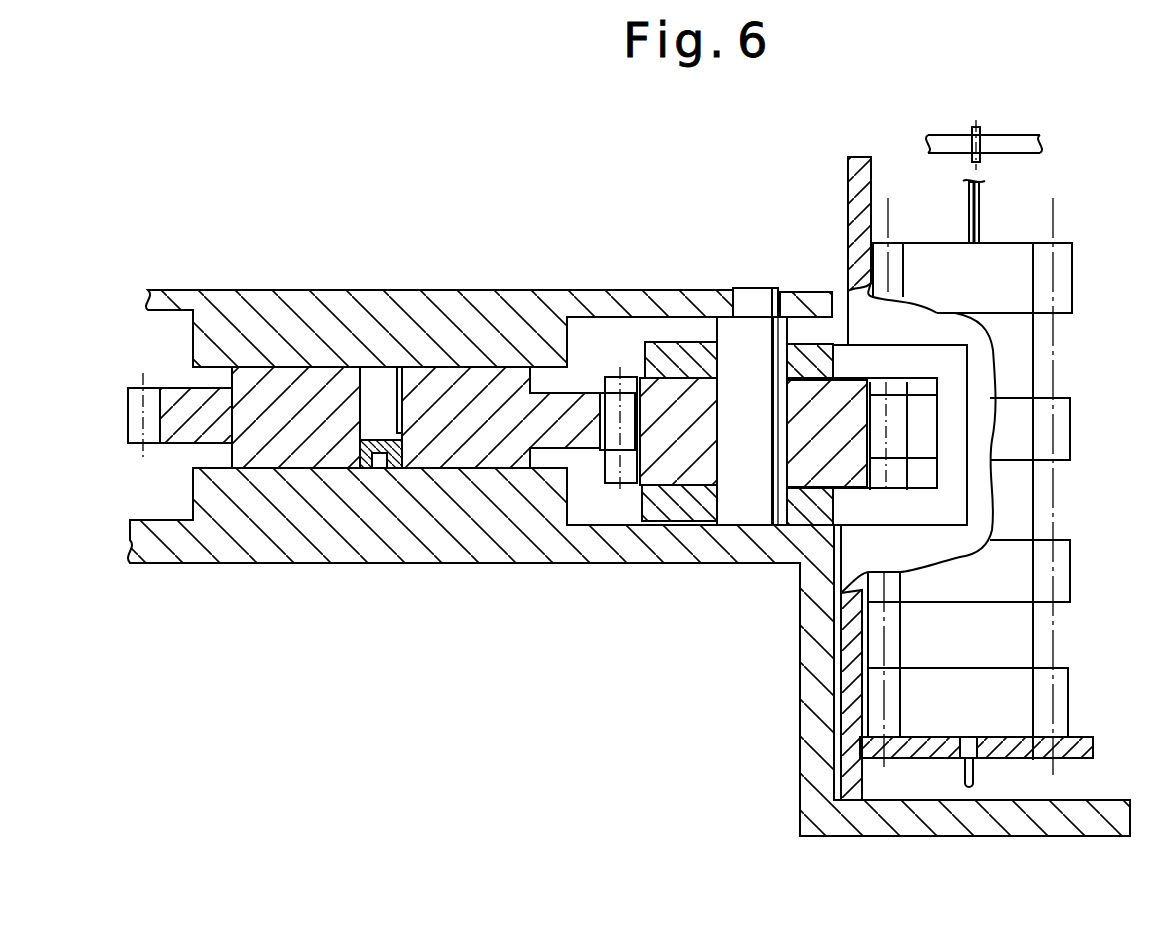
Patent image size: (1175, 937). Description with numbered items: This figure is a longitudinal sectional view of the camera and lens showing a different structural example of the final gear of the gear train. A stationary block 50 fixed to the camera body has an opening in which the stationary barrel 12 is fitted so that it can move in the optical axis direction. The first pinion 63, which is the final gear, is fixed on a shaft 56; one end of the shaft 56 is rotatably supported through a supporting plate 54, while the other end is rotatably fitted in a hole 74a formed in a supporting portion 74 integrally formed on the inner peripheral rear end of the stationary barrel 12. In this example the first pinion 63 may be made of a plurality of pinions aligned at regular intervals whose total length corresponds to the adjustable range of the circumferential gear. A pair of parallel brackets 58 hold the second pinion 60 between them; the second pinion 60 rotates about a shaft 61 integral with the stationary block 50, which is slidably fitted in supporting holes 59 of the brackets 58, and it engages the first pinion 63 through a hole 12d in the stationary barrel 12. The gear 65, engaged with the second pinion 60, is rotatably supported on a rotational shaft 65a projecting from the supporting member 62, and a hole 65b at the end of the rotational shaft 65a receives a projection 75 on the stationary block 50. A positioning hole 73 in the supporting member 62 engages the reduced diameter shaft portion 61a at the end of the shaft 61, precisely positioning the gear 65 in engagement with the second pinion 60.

The stationary barrel 12 is at (855, 178).
The hole 12d is at (917, 383).
The stationary block 50 is at (800, 697).
The supporting plate 54 is at (997, 140).
The shaft 56 is at (968, 126).
The brackets 58 is at (655, 345).
The supporting holes 59 is at (728, 499).
The second pinion 60 is at (672, 473).
The shaft 61 is at (722, 328).
The reduced diameter shaft portion 61a is at (773, 289).
The supporting member 62 is at (522, 292).
The first pinion 63 is at (1075, 244).
The gear 65 is at (466, 385).
The rotational shaft 65a is at (388, 383).
The hole 65b is at (385, 465).
The positioning hole 73 is at (740, 289).
The supporting portion 74 is at (1033, 760).
The hole 74a is at (967, 737).
The projection 75 is at (398, 465).